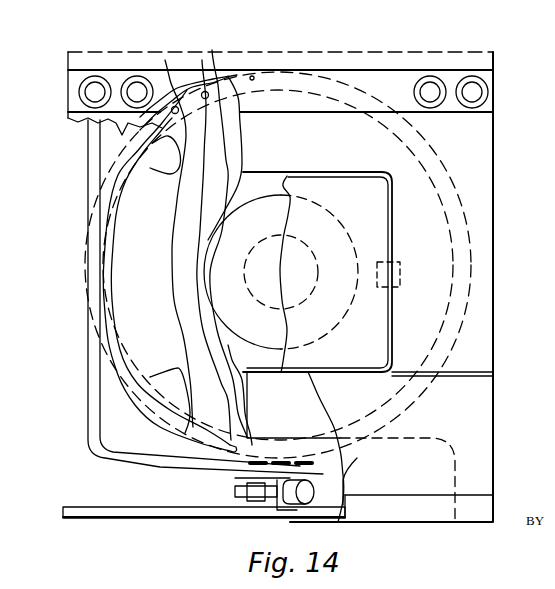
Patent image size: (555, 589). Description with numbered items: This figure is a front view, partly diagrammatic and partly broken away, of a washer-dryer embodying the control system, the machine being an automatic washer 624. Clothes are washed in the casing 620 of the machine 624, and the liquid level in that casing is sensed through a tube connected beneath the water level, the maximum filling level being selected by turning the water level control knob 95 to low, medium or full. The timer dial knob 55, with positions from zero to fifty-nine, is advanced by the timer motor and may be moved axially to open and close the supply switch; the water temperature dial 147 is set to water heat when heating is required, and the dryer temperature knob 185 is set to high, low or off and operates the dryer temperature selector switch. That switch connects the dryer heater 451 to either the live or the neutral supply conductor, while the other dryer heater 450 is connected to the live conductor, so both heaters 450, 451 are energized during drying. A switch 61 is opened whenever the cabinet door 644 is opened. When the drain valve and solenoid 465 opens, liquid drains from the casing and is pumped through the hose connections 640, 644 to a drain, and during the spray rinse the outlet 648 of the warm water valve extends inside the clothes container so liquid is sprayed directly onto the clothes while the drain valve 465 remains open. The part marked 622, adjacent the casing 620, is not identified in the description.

The timer dial knob 55 is at (472, 92).
The door switch 61 is at (400, 264).
The water level control knob 95 is at (95, 92).
The water temperature dial 147 is at (430, 92).
The dryer temperature knob 185 is at (137, 90).
The dryer heater 450 is at (187, 127).
The dryer heater 451 is at (205, 90).
The drain valve and solenoid 465 is at (240, 495).
The casing 620 is at (112, 180).
The arm inner edge 622 is at (110, 243).
The automatic washer 624 is at (480, 160).
The hose connection 640 is at (320, 500).
The cabinet door 644 is at (380, 330).
The valve outlet 648 is at (287, 205).